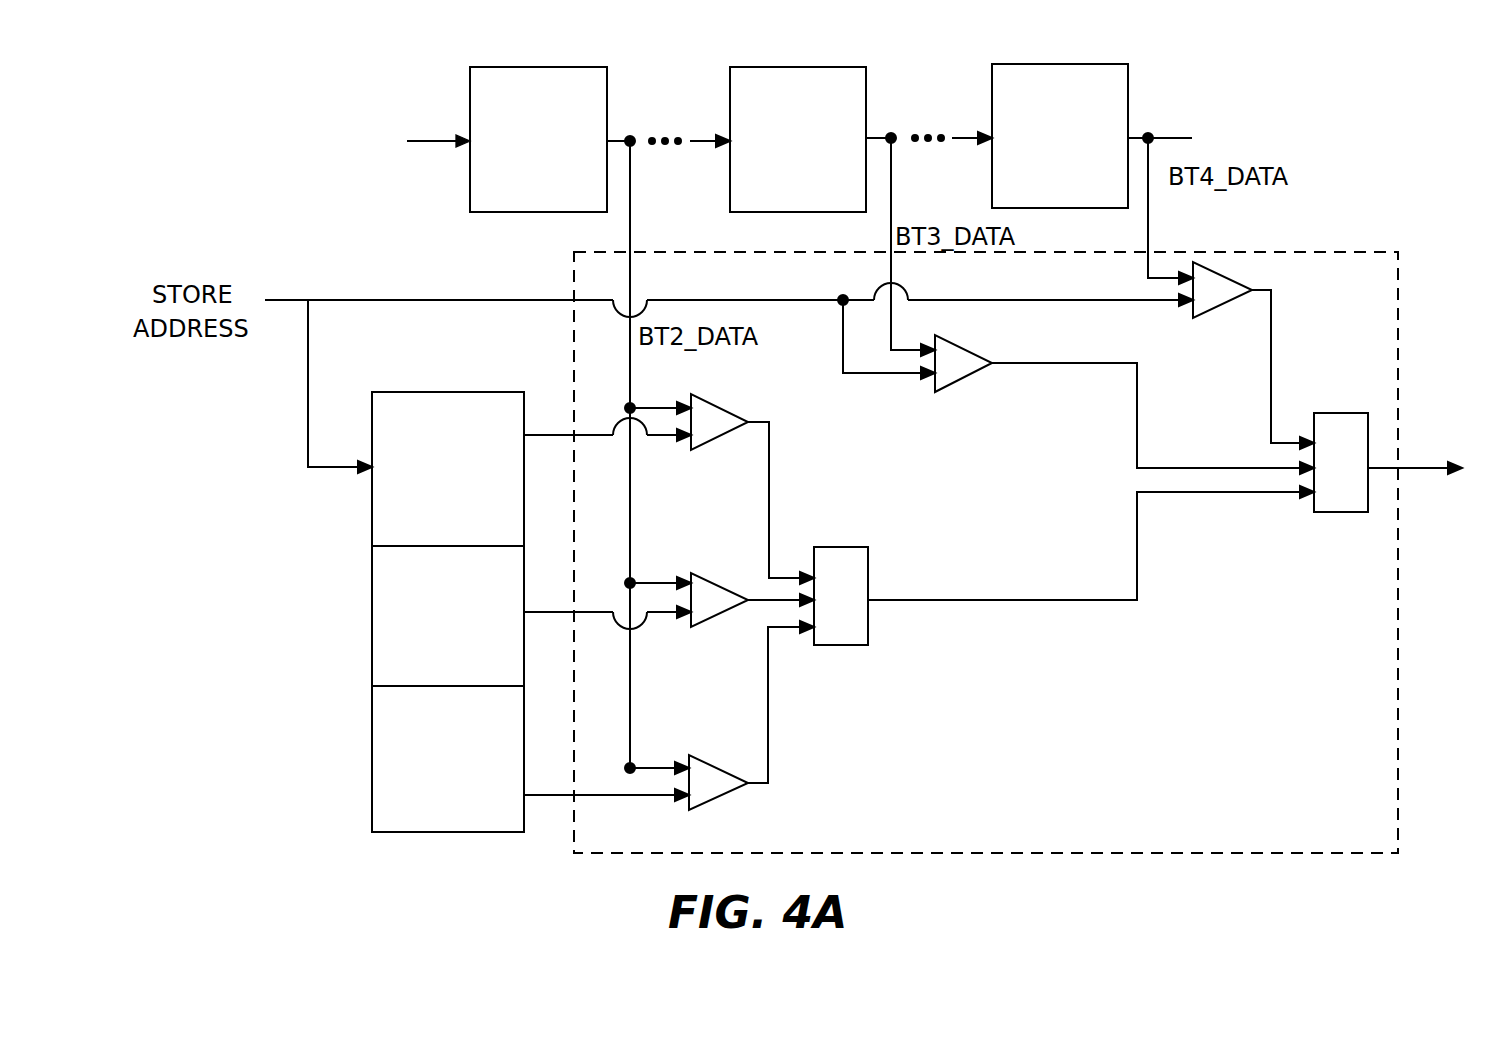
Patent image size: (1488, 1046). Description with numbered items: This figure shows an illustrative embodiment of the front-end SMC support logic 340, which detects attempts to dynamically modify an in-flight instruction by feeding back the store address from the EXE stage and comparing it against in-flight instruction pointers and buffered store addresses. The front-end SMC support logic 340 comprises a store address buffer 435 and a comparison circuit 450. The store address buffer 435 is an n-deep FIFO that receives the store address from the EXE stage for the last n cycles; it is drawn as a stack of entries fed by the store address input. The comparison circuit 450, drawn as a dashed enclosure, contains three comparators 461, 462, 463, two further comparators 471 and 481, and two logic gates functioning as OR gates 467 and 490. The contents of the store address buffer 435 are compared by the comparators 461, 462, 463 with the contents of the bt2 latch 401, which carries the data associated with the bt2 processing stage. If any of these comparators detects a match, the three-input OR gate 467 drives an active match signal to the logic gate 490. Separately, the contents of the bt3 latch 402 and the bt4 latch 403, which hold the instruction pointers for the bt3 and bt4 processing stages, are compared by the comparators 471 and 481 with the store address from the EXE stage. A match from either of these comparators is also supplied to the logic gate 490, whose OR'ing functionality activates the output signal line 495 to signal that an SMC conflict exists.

The front-end SMC support logic 340 is at (242, 89).
The bt2 latch 401 is at (516, 206).
The bt3 latch 402 is at (776, 206).
The bt4 latch 403 is at (1038, 203).
The store address buffer 435 is at (315, 582).
The comparison circuit 450 is at (1176, 802).
The comparator 461 is at (717, 398).
The comparator 462 is at (698, 572).
The comparator 463 is at (707, 760).
The 3-input OR gate 467 is at (833, 645).
The comparator 471 is at (963, 382).
The comparator 481 is at (1237, 297).
The logic gate 490 is at (1322, 512).
The output signal line 495 is at (1408, 465).